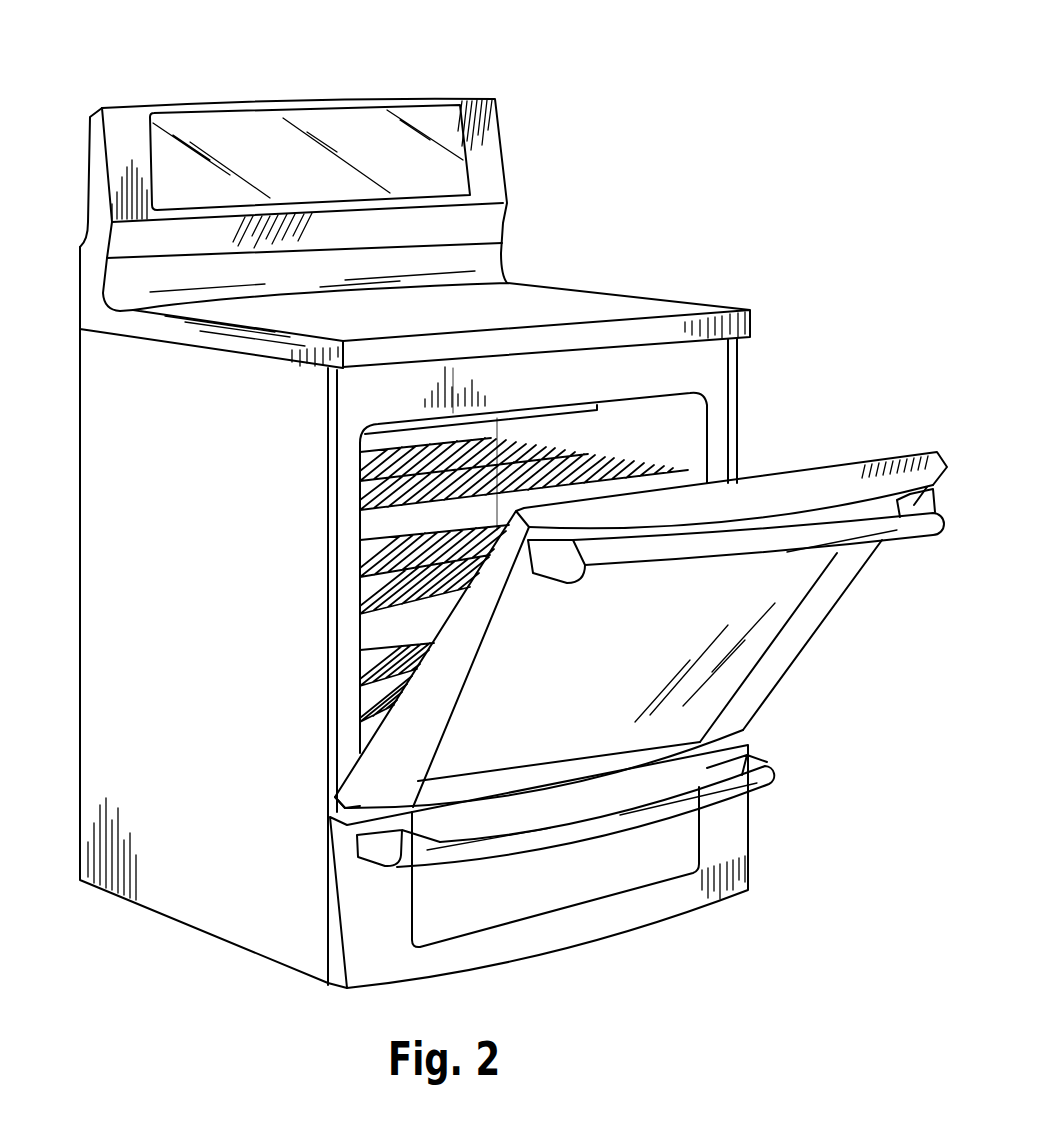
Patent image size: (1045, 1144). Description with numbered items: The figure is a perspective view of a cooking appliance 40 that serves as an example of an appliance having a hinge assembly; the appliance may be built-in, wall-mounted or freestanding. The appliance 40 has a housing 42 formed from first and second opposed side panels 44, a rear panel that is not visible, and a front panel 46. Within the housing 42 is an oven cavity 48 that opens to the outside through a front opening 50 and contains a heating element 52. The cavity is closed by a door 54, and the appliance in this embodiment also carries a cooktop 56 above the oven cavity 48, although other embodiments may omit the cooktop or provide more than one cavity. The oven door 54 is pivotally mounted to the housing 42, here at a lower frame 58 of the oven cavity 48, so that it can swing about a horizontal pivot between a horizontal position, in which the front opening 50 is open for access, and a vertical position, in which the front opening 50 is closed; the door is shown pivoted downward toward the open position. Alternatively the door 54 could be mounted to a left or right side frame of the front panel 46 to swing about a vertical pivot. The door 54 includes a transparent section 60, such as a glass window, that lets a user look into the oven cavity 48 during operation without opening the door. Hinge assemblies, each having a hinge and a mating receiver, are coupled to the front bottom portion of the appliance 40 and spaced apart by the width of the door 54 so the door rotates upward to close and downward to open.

The cooking appliance 40 is at (99, 87).
The housing 42 is at (103, 518).
The side panel 44 is at (231, 708).
The front panel 46 is at (348, 400).
The oven cavity 48 is at (373, 632).
The front opening 50 is at (683, 451).
The heating element 52 is at (570, 412).
The door 54 is at (840, 593).
The cooktop 56 is at (633, 306).
The lower frame 58 is at (328, 812).
The transparent section 60 is at (616, 677).